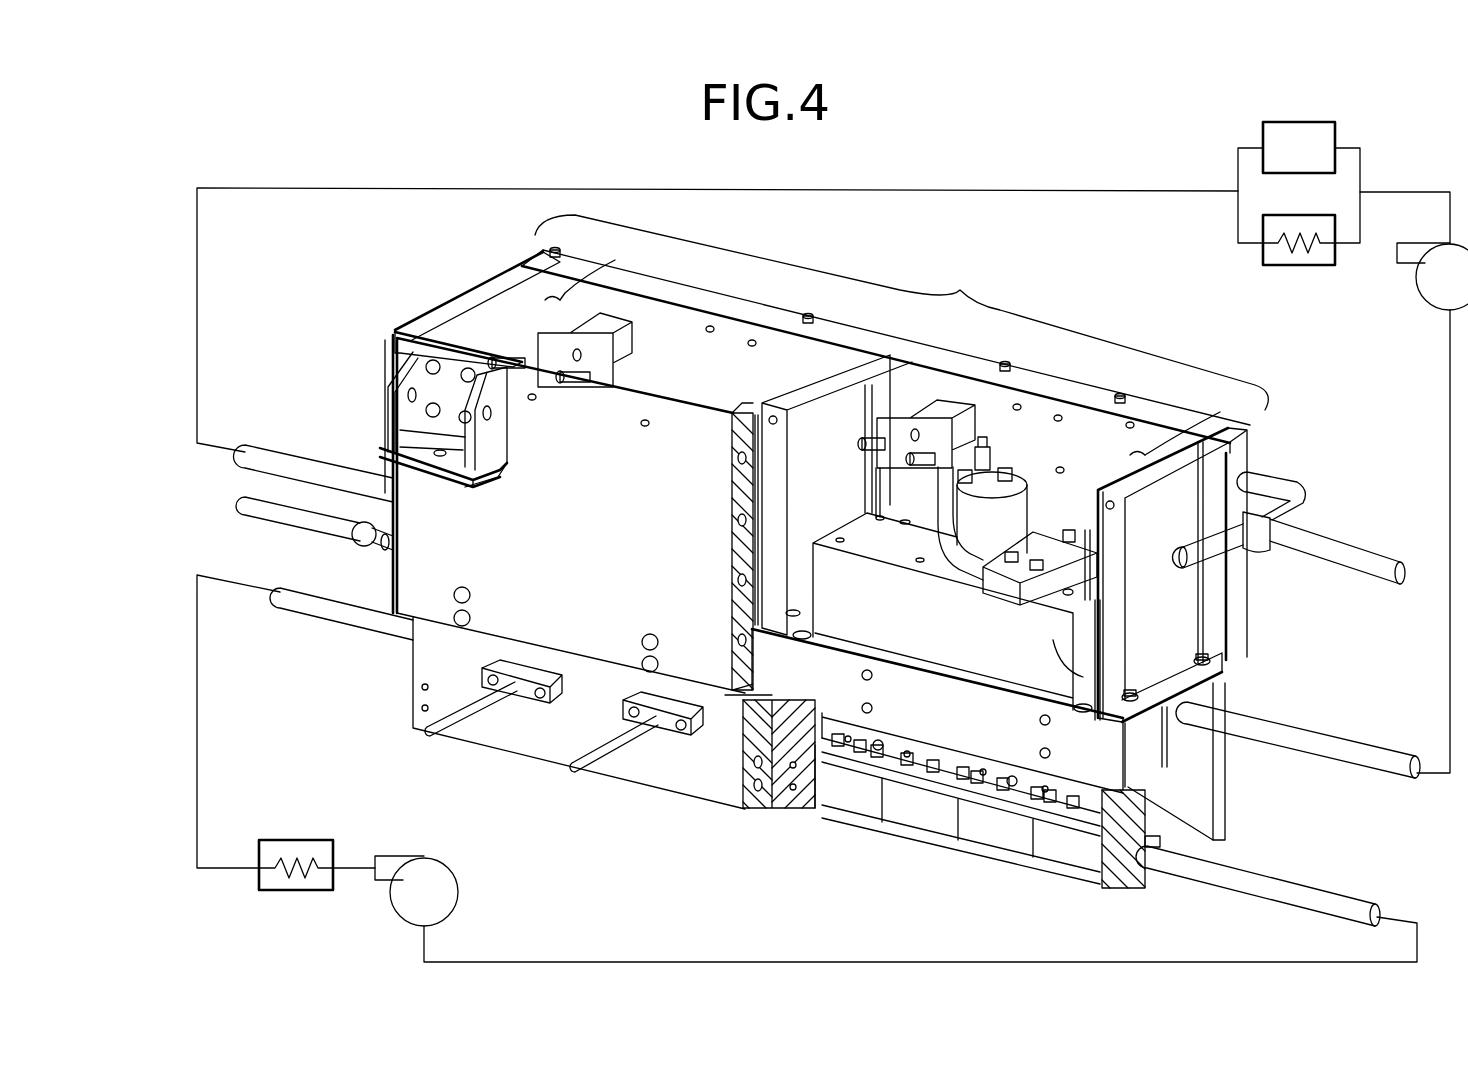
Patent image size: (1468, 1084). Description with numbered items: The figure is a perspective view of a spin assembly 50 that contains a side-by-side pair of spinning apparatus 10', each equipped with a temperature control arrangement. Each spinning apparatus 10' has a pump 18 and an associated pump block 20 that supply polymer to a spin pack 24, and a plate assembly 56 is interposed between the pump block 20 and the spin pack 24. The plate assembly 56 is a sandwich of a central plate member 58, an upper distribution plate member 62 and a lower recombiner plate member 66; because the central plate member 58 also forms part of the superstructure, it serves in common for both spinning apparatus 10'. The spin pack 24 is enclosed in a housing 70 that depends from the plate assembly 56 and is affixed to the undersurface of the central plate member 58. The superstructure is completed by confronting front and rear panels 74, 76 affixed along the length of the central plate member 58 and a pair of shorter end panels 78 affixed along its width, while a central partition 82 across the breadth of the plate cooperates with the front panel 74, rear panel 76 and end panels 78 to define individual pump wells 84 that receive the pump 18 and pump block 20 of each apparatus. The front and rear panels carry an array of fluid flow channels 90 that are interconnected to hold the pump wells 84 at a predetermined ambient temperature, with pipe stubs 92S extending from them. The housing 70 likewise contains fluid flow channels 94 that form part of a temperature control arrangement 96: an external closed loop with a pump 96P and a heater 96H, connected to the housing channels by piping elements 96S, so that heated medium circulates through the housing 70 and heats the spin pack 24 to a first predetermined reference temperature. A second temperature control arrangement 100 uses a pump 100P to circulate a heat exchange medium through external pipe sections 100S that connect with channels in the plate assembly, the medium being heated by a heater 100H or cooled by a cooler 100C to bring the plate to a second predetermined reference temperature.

The second temperature control arrangement 100 is at (645, 185).
The cooler 100C is at (1335, 127).
The heater 100H is at (1266, 263).
The pump 100P is at (1418, 290).
The external pipe sections 100S is at (303, 465).
The fluid supply tubes 92S is at (252, 506).
The temperature control arrangement 96 is at (657, 962).
The piping elements 96S is at (197, 712).
The heater 96H is at (295, 840).
The pump 96P is at (432, 858).
The end panels 78 is at (478, 293).
The pump wells 84 is at (902, 344).
The spinning apparatus 10' is at (887, 333).
The rear panel 76 is at (820, 332).
The spin assembly 50 is at (963, 292).
The central partition 82 is at (860, 355).
The pump 18 is at (1034, 489).
The fluid flow channels 90 is at (728, 457).
The front panel 74 is at (460, 548).
The central plate member 58 is at (953, 722).
The pump block 20 is at (1180, 745).
The plate assembly 56 is at (1143, 757).
The spin pack 24 is at (1112, 858).
The fluid flow channels 94 is at (770, 808).
The housing 70 is at (807, 807).
The lower recombiner plate member 66 is at (940, 757).
The upper distribution plate member 62 is at (1028, 675).